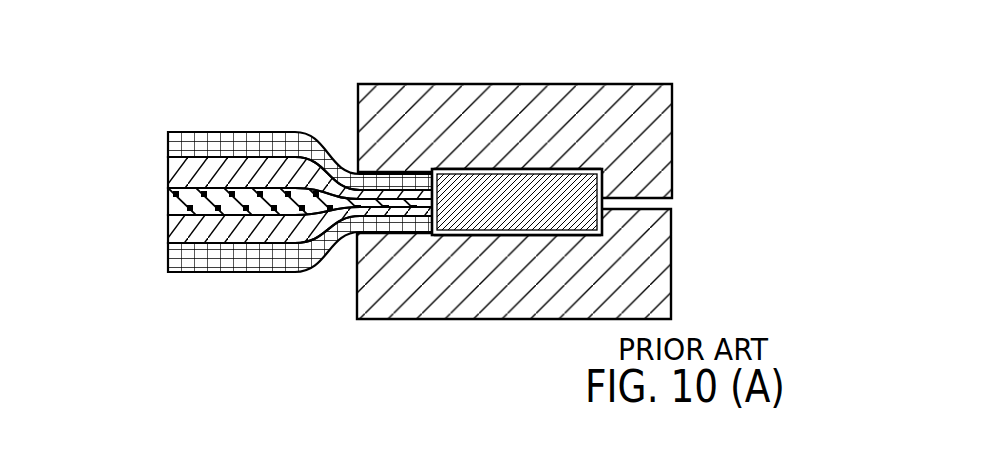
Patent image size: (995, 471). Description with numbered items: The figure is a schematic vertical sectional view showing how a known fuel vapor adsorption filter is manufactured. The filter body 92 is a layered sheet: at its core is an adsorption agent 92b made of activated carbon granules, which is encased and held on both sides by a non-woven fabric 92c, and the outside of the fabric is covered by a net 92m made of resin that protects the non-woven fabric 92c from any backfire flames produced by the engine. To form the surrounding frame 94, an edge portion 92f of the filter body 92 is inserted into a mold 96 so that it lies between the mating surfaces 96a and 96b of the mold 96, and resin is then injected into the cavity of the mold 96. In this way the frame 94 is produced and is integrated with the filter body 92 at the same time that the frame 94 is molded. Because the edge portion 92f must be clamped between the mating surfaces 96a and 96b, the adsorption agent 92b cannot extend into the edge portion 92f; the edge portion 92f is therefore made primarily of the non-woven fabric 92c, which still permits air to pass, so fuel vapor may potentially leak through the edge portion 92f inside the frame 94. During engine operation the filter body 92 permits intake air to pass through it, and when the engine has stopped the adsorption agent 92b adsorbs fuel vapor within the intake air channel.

The filter body 92 is at (235, 225).
The net 92m is at (180, 145).
The non-woven fabric 92c is at (178, 164).
The adsorption agent 92b is at (178, 200).
The edge portion 92f is at (398, 217).
The frame 94 is at (513, 188).
The mold 96 is at (550, 196).
The mating surface 96a is at (381, 176).
The mating surface 96b is at (357, 262).